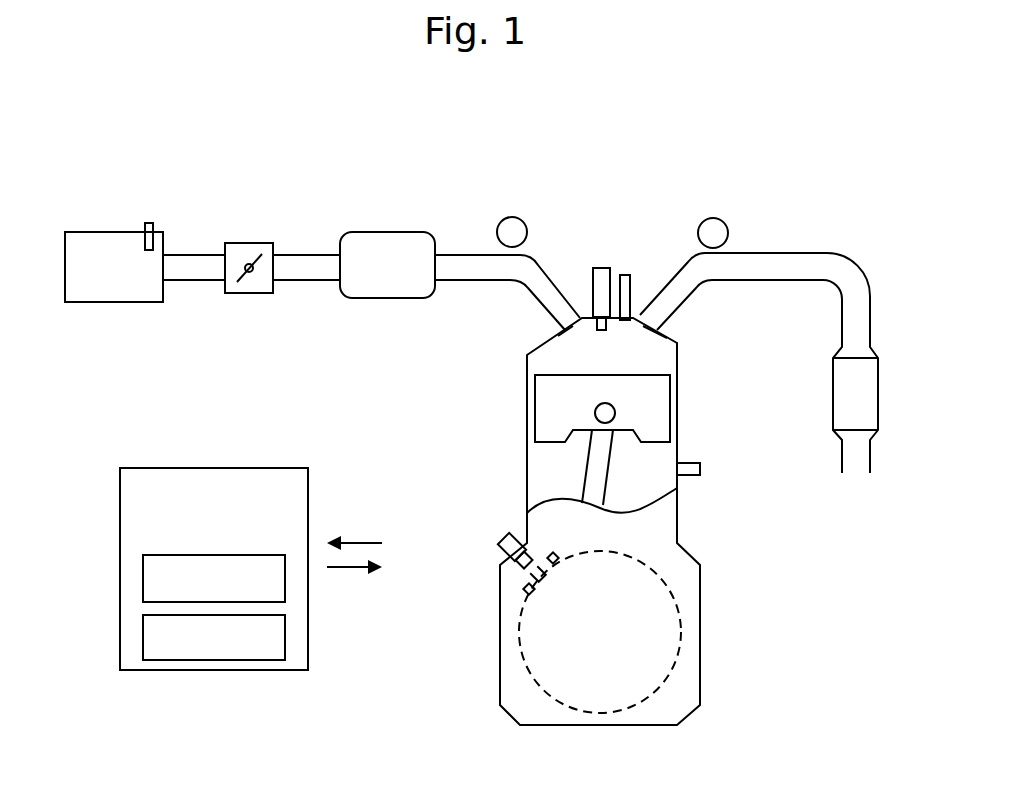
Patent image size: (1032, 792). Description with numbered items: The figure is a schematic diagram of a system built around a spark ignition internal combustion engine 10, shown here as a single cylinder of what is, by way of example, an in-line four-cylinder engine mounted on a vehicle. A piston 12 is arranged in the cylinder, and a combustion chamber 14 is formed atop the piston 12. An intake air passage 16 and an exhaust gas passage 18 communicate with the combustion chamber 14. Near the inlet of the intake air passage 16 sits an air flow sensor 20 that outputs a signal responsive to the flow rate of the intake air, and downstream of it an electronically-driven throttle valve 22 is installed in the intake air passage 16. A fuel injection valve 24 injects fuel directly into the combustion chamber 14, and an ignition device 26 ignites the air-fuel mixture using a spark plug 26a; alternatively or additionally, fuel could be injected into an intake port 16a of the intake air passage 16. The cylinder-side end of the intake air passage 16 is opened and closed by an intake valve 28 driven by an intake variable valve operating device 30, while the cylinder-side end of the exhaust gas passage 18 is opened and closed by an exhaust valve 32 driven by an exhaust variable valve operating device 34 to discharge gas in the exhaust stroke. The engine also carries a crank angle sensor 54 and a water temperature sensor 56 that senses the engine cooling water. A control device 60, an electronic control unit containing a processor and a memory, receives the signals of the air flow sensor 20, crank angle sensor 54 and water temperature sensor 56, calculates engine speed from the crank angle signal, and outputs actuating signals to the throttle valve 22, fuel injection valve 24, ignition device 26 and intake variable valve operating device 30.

The internal combustion engine 10 is at (826, 162).
The piston 12 is at (655, 416).
The combustion chamber 14 is at (655, 355).
The intake air passage 16 is at (316, 303).
The intake port 16a is at (544, 309).
The exhaust gas passage 18 is at (802, 263).
The air flow sensor 20 is at (146, 222).
The throttle valve 22 is at (233, 243).
The fuel injection valve 24 is at (631, 290).
The ignition device 26 is at (582, 256).
The spark plug 26a is at (607, 263).
The intake valve 28 is at (533, 284).
The intake variable valve operating device 30 is at (518, 217).
The exhaust valve 32 is at (705, 283).
The exhaust variable valve operating device 34 is at (718, 218).
The crank angle sensor 54 is at (502, 558).
The water temperature sensor 56 is at (700, 468).
The control device 60 is at (185, 468).